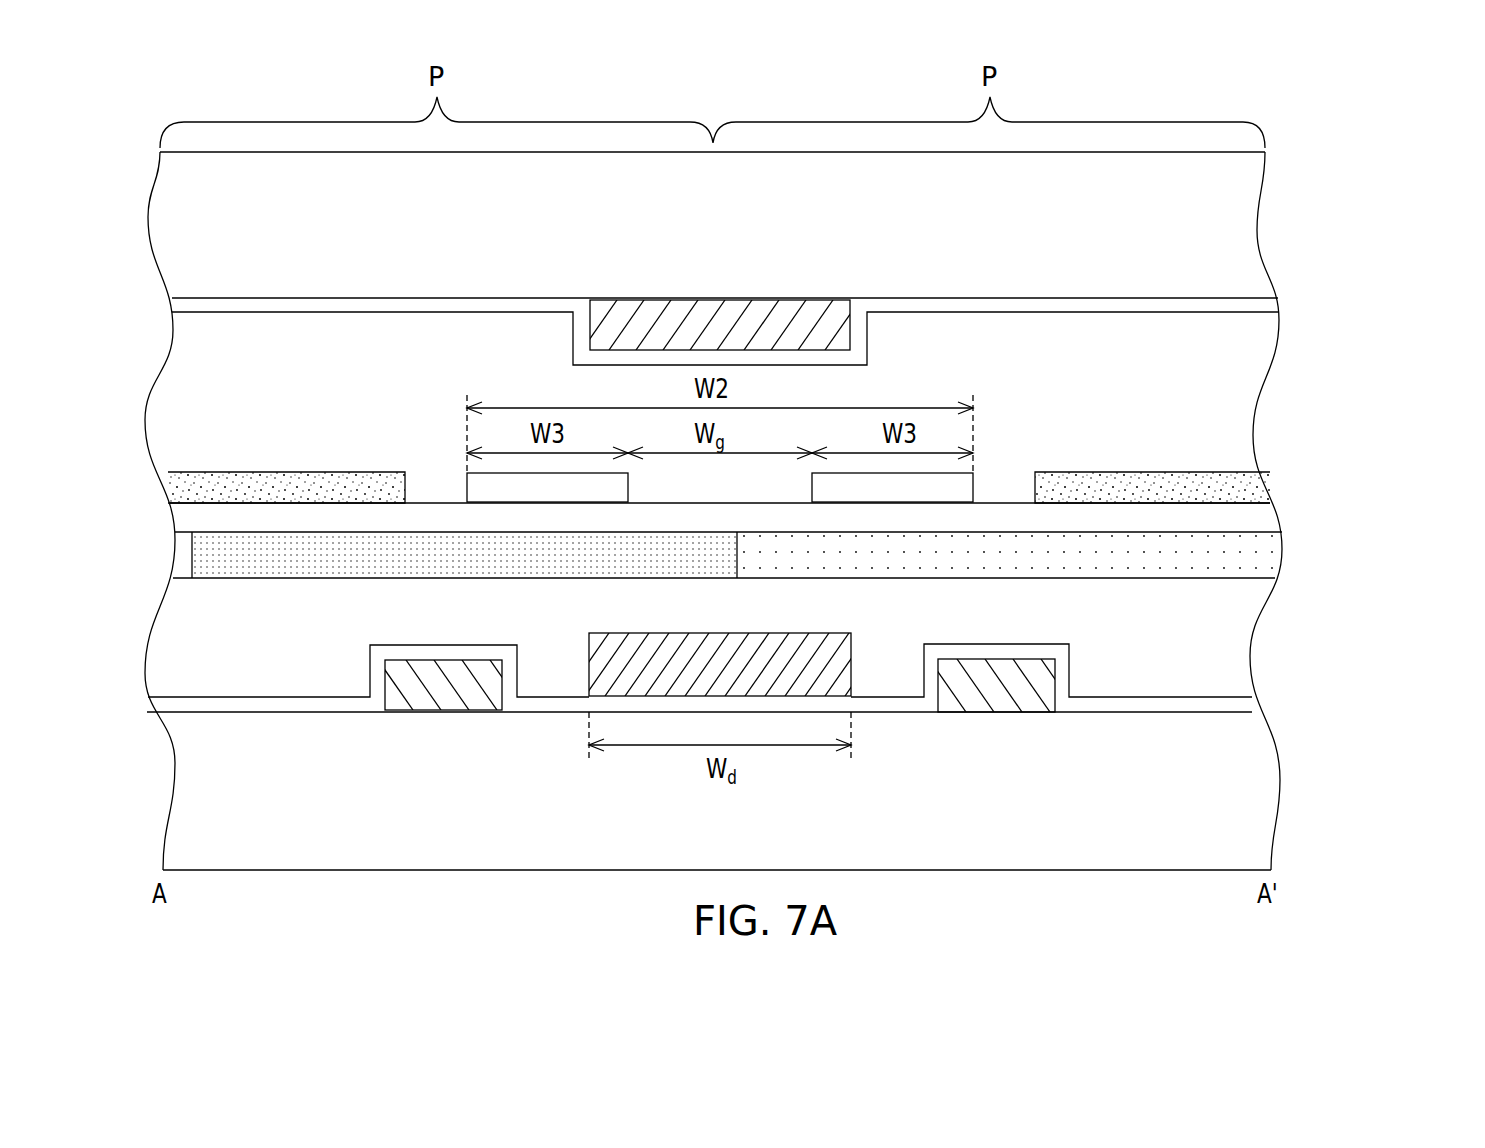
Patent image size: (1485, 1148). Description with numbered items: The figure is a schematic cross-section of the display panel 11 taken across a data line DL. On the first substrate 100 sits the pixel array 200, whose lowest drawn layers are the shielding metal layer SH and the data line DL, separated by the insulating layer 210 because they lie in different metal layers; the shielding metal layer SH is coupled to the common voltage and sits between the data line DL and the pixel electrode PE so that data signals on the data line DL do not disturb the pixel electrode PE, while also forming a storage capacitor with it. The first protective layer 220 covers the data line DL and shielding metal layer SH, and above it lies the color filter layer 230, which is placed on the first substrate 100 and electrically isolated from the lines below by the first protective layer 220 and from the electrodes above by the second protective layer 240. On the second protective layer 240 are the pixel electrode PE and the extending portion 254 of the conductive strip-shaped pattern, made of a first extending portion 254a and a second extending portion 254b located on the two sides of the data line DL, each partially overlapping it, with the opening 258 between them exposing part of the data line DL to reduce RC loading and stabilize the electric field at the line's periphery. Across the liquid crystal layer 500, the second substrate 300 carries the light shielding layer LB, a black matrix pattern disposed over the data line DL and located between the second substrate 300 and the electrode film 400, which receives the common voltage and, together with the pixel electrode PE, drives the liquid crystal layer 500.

The second substrate 300 is at (1235, 228).
The electrode film 400 is at (1270, 306).
The light shielding layer LB is at (752, 316).
The liquid crystal layer 500 is at (1245, 371).
The pixel electrode PE is at (212, 492).
The first extending portion 254a is at (615, 484).
The second extending portion 254b is at (962, 484).
The extending portion 254 is at (1335, 385).
The opening 258 is at (780, 484).
The second protective layer 240 is at (1268, 517).
The color filter layer 230 is at (1268, 548).
The first protective layer 220 is at (1248, 618).
The data line DL is at (851, 646).
The shielding metal layer SH is at (405, 677).
The insulating layer 210 is at (1244, 703).
The first substrate 100 is at (1256, 780).
The pixel array 200 is at (1393, 405).
The display panel 11 is at (1402, 919).